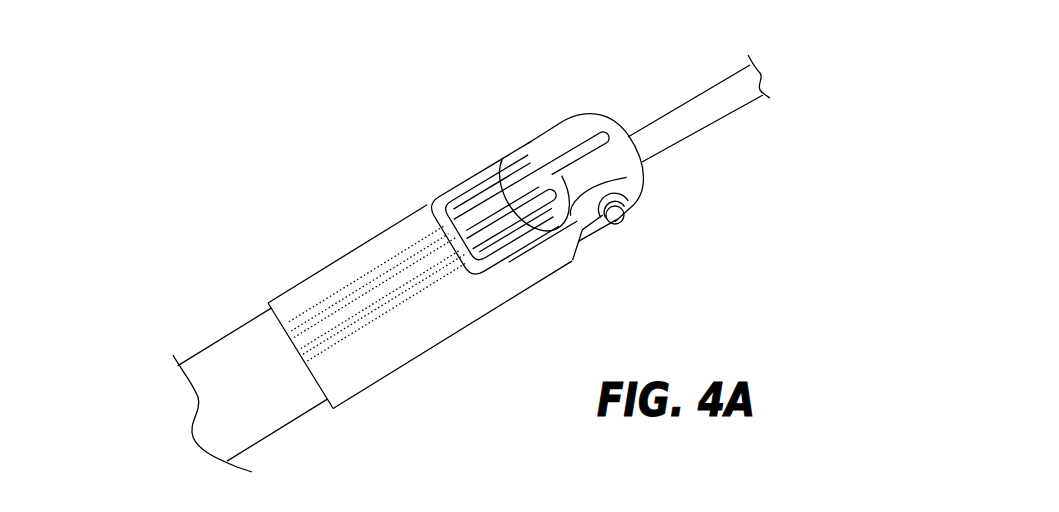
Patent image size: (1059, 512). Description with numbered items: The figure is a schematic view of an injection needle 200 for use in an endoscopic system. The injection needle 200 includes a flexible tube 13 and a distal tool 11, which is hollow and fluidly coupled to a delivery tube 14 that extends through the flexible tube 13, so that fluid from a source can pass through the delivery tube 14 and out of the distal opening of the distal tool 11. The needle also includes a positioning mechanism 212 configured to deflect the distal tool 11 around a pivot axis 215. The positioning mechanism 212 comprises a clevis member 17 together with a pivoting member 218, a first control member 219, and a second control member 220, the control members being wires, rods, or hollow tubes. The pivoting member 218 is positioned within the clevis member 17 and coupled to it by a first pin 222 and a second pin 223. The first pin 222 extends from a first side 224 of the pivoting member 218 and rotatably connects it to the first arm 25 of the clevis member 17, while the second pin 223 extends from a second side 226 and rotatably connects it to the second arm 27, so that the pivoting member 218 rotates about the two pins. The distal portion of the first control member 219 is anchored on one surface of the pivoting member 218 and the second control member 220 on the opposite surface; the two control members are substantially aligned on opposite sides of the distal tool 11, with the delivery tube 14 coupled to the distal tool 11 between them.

The injection needle 200 is at (155, 104).
The distal tool 11 is at (706, 91).
The flexible tube 13 is at (213, 346).
The delivery tube 14 is at (492, 238).
The clevis member 17 is at (343, 250).
The first arm 25 is at (444, 194).
The second arm 27 is at (573, 261).
The positioning mechanism 212 is at (384, 181).
The pivot axis 215 is at (616, 222).
The pivoting member 218 is at (602, 112).
The first control member 219 is at (503, 185).
The second control member 220 is at (516, 249).
The first pin 222 is at (570, 111).
The second pin 223 is at (619, 221).
The first side 224 is at (532, 129).
The second side 226 is at (639, 198).